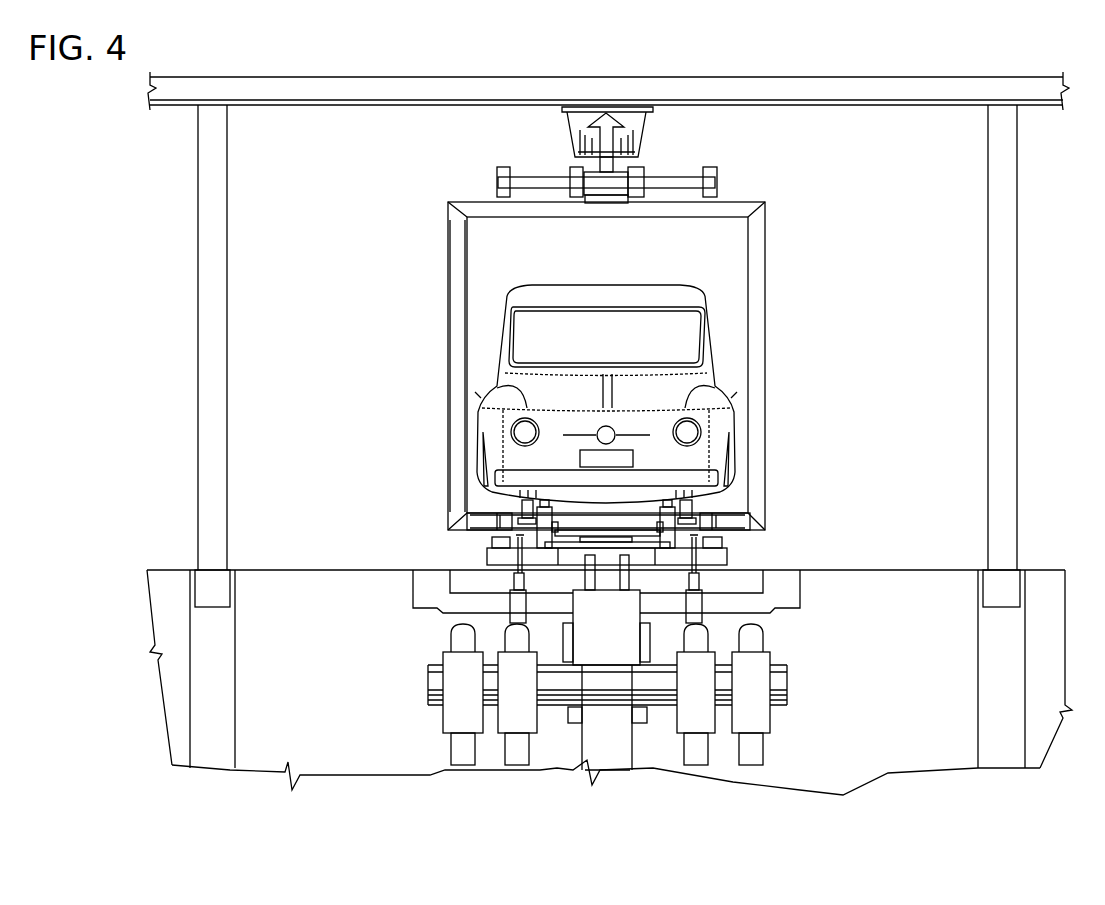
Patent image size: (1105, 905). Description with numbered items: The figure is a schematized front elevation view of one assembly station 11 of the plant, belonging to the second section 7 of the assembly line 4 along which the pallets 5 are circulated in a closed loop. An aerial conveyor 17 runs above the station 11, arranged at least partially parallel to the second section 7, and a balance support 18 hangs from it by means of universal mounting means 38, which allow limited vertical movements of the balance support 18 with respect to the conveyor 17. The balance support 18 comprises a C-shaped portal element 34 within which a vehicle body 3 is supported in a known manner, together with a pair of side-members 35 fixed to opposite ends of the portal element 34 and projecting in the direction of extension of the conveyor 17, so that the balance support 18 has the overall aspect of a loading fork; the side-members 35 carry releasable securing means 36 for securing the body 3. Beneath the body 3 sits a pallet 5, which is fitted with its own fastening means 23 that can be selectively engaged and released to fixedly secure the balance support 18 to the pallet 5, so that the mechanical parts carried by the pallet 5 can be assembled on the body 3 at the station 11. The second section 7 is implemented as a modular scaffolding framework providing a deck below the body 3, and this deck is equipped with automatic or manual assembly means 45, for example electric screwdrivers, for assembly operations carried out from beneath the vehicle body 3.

The vehicle body 3 is at (722, 383).
The assembly line 4 is at (1045, 238).
The pallet 5 is at (718, 557).
The second section 7 is at (1017, 505).
The station 11 is at (408, 436).
The conveyor 17 is at (755, 108).
The balance support 18 is at (768, 262).
The fastening means 23 is at (703, 508).
The C-shaped portal element 34 is at (455, 238).
The side-member 35 is at (495, 521).
The releasable securing means 36 is at (522, 499).
The universal mounting means 38 is at (645, 158).
The assembly means 45 is at (778, 640).